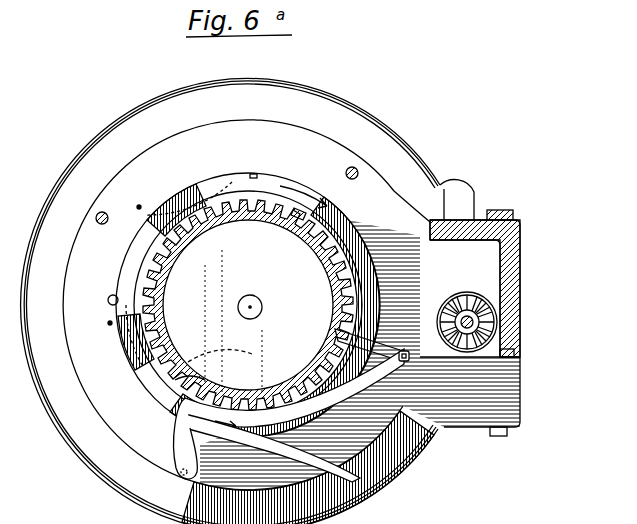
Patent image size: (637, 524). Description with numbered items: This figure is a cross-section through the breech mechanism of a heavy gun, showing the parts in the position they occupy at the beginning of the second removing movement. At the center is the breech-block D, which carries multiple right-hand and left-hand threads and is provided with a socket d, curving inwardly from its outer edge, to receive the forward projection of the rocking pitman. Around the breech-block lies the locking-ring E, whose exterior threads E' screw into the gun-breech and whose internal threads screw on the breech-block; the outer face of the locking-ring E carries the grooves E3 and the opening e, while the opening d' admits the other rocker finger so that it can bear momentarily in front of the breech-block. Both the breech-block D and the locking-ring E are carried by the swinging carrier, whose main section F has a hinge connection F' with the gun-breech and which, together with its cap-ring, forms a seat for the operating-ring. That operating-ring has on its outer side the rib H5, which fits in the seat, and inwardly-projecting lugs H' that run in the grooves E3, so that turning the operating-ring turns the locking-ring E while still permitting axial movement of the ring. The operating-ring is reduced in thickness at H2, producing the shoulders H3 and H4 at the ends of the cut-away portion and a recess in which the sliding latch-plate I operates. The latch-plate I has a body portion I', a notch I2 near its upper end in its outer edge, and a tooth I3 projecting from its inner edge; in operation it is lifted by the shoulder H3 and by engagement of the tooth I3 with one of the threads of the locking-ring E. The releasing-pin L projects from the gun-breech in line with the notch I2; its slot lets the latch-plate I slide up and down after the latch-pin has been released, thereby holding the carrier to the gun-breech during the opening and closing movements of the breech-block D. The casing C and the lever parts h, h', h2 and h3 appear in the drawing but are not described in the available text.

The casing C is at (165, 103).
The main section of swinging carrier F is at (307, 316).
The hinge connection F' is at (502, 200).
The locking-ring E is at (248, 292).
The exterior threads of locking-ring E' is at (111, 251).
The grooves in locking-ring E3 is at (170, 323).
The inwardly-projecting lugs H' is at (314, 192).
The cut-away or reduced portion of operating-ring H2 is at (172, 198).
The shoulder of operating-ring H3 is at (140, 322).
The shoulder of operating-ring H4 is at (226, 195).
The rib of operating-ring H5 is at (258, 175).
The breech-block D is at (248, 305).
The socket in breech-block d is at (222, 351).
The opening in locking-ring d' is at (350, 321).
The opening in locking-ring e is at (190, 383).
The lever h is at (297, 407).
The lever arm h' is at (272, 448).
The lever hook h2 is at (174, 407).
The lever pin h3 is at (263, 352).
The latch-plate I is at (251, 275).
The body portion of latch-plate I' is at (494, 319).
The notch in latch-plate I2 is at (140, 228).
The tooth of latch-plate I3 is at (185, 256).
The releasing-pin L is at (110, 297).